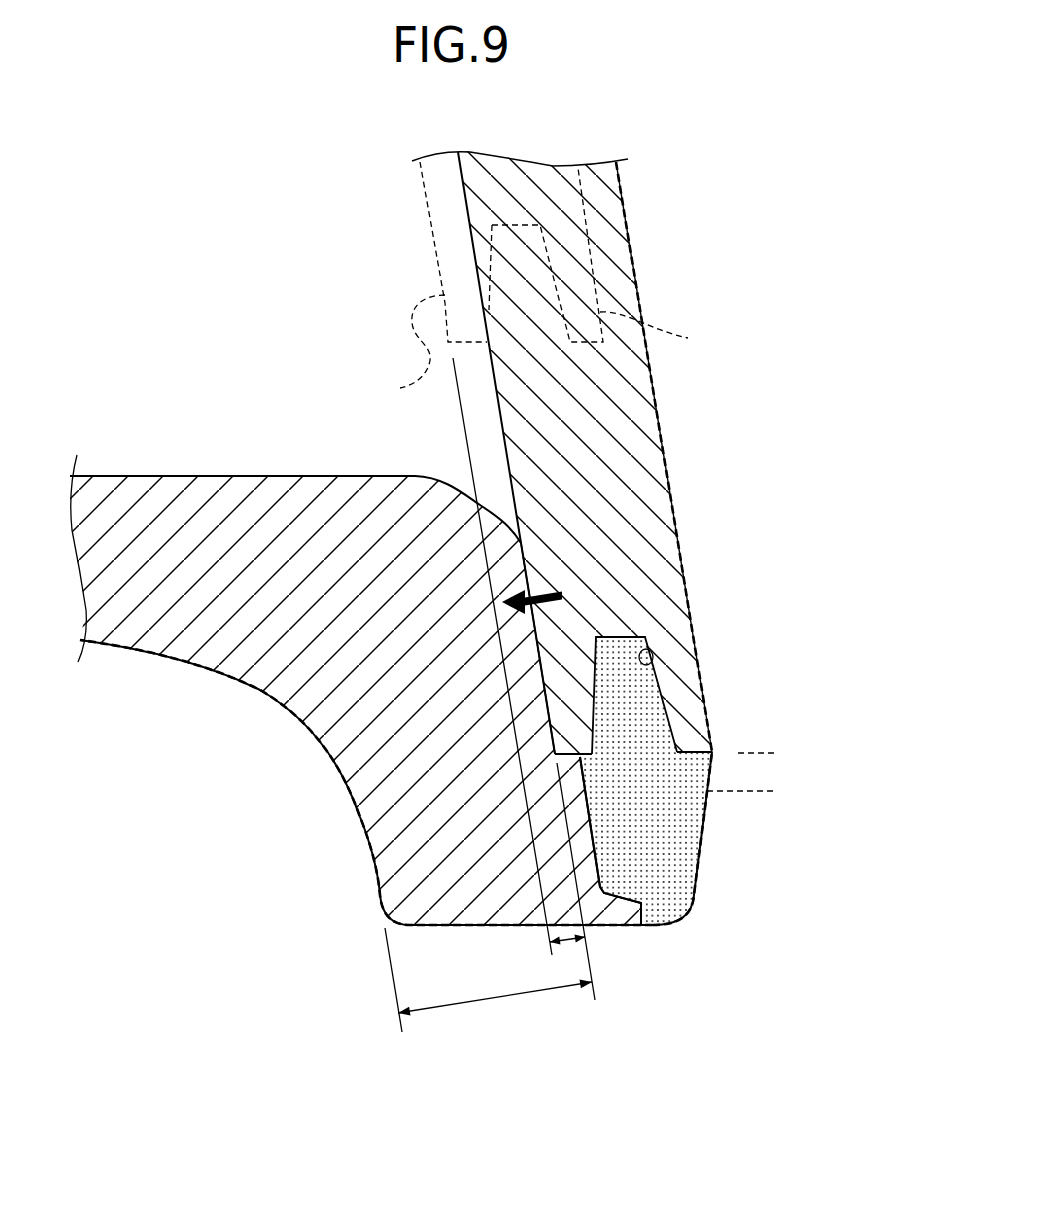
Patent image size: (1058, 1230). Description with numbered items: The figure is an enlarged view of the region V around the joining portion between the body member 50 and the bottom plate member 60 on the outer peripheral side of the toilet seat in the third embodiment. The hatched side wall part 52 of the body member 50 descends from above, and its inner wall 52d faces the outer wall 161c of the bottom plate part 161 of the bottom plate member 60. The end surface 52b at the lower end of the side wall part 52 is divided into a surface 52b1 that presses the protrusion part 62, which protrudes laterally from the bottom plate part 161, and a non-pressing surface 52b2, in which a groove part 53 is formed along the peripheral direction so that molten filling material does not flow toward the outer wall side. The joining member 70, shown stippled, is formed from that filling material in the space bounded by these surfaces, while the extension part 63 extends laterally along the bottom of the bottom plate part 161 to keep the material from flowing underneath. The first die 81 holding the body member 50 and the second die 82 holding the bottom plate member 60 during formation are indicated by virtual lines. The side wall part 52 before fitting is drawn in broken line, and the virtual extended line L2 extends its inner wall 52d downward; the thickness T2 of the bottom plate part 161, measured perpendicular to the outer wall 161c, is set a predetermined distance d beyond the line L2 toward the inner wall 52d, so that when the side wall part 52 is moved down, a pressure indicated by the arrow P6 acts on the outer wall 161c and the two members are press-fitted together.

The body member 50 is at (634, 256).
The side wall part 52 is at (628, 400).
The end surface 52b is at (825, 670).
The surface 52b1 is at (565, 757).
The non-pressing surface 52b2 is at (714, 756).
The inner wall 52d is at (497, 413).
The groove part 53 is at (652, 663).
The bottom plate member 60 is at (148, 470).
The protrusion part 62 is at (580, 800).
The extension part 63 is at (623, 910).
The joining member 70 is at (680, 829).
The first die 81 is at (667, 458).
The second die 82 is at (362, 833).
The bottom plate part 161 is at (217, 507).
The outer wall 161c is at (535, 624).
The virtual extended line L2 is at (470, 455).
The arrow P6 is at (560, 590).
The thickness T2 is at (490, 898).
The predetermined distance d is at (567, 954).
The region V is at (143, 239).